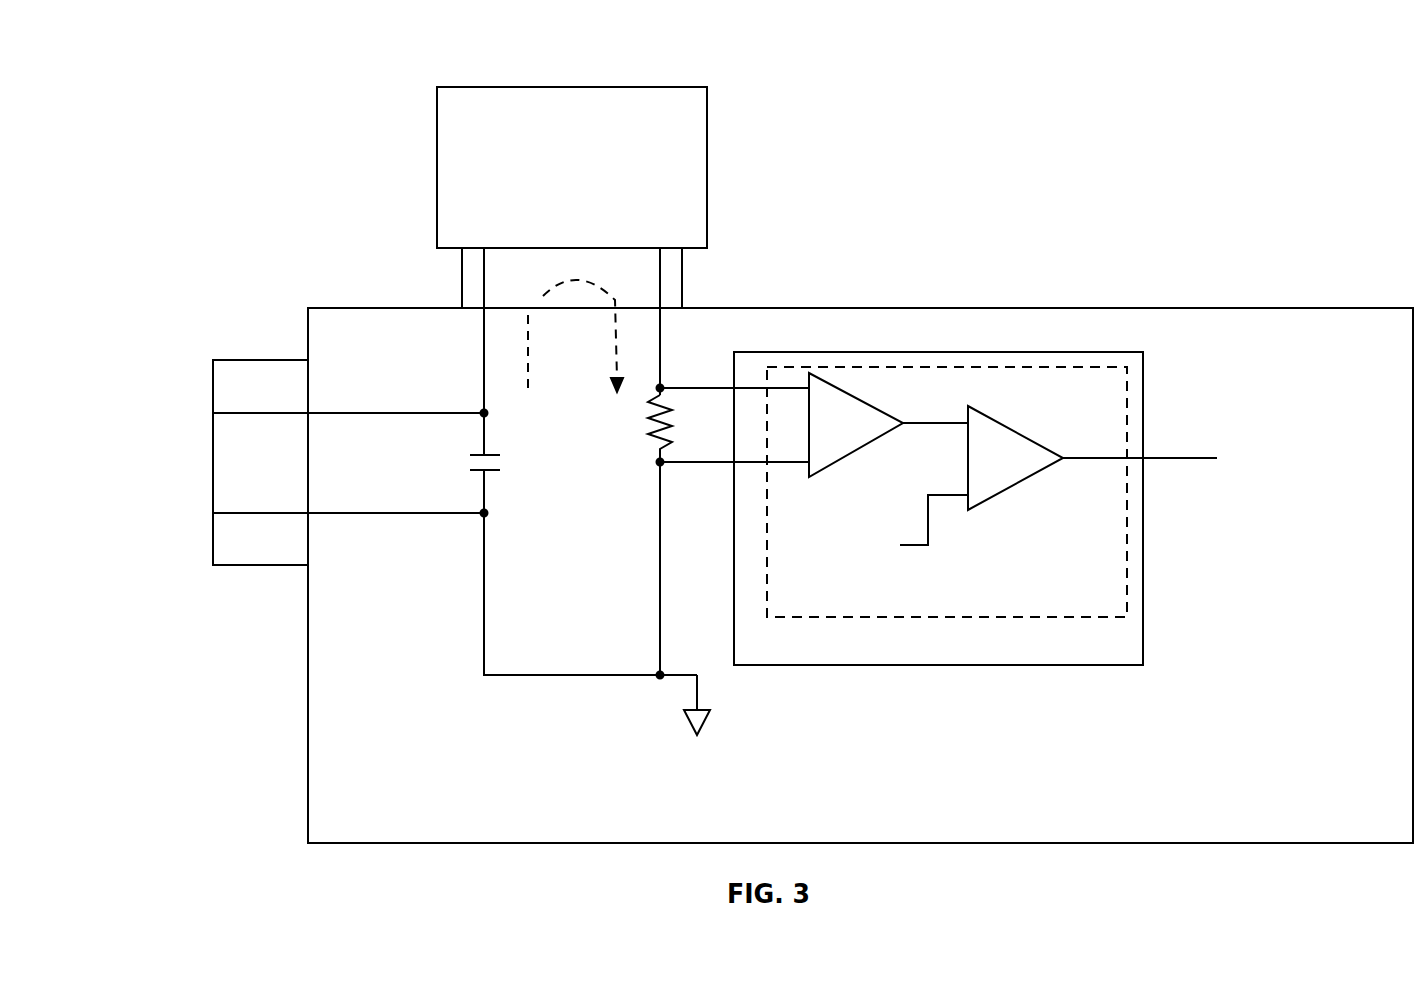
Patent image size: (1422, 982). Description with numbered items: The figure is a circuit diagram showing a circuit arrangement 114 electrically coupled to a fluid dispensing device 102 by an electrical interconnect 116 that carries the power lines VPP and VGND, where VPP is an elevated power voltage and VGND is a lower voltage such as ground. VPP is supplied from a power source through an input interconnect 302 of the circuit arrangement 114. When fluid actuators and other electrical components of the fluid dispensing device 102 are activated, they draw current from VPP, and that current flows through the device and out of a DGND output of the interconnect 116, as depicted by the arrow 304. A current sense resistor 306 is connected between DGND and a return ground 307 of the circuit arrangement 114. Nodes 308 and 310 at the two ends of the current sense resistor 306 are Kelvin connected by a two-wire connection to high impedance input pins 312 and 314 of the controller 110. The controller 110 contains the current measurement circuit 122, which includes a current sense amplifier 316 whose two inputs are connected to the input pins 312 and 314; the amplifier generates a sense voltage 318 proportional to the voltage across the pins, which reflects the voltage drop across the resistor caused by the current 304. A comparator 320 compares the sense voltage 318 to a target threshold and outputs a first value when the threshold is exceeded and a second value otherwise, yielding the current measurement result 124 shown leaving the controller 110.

The fluid dispensing device 102 is at (572, 87).
The controller 110 is at (937, 665).
The circuit arrangement 114 is at (1075, 308).
The electrical interconnect 116 is at (684, 278).
The current measurement circuit 122 is at (1127, 593).
The current measurement result 124 is at (1272, 474).
The input interconnect 302 is at (262, 565).
The arrow 304 is at (545, 293).
The current sense resistor 306 is at (650, 430).
The return ground 307 is at (697, 690).
The node 308 is at (693, 388).
The node 310 is at (687, 465).
The high impedance input pin 312 is at (733, 390).
The high impedance input pin 314 is at (733, 465).
The current sense amplifier 316 is at (853, 394).
The sense voltage 318 is at (950, 423).
The comparator 320 is at (1017, 430).